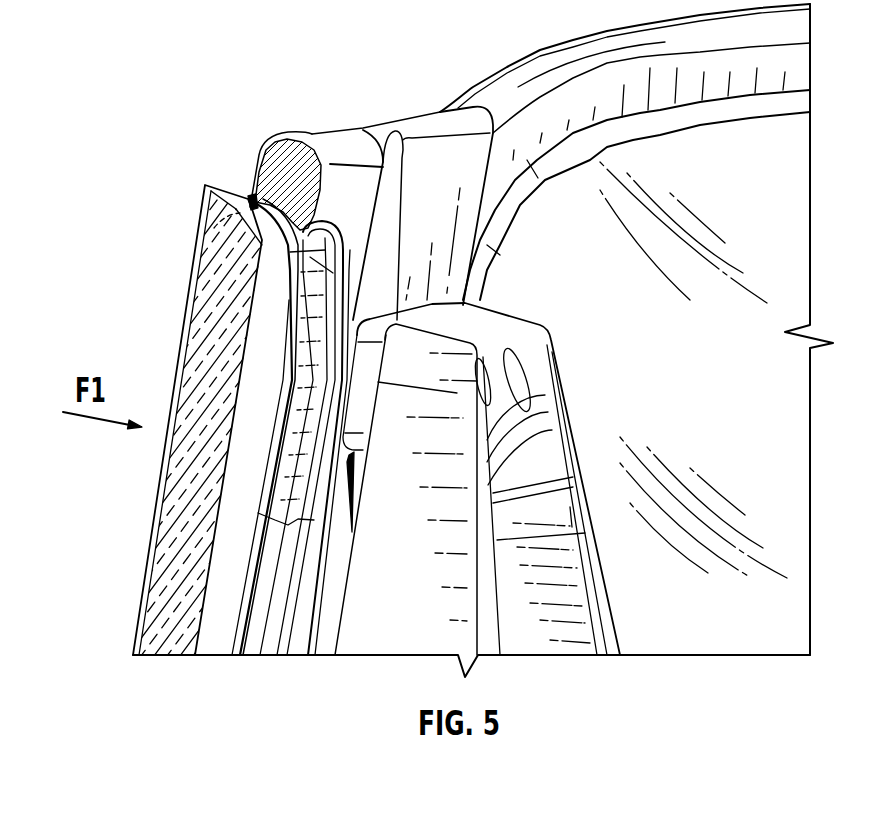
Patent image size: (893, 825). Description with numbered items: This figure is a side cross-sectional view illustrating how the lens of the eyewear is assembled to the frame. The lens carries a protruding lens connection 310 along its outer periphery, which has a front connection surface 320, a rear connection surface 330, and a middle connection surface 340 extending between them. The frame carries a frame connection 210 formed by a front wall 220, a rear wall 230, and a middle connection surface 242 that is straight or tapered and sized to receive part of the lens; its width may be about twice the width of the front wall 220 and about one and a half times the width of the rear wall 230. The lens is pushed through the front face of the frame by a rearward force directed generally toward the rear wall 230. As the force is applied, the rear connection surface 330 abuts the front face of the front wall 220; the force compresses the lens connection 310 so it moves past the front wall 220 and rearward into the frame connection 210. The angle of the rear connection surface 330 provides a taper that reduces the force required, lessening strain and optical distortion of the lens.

The frame connection 210 is at (264, 146).
The middle connection surface 242 is at (272, 203).
The rear wall 230 is at (306, 228).
The front wall 220 is at (245, 202).
The middle connection surface 340 is at (220, 187).
The front connection surface 320 is at (207, 220).
The rear connection surface 330 is at (210, 227).
The lens connection 310 is at (194, 346).